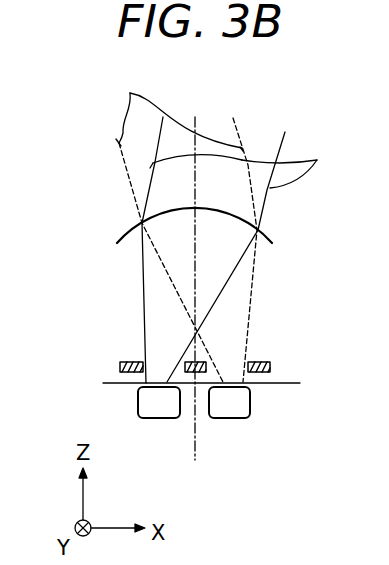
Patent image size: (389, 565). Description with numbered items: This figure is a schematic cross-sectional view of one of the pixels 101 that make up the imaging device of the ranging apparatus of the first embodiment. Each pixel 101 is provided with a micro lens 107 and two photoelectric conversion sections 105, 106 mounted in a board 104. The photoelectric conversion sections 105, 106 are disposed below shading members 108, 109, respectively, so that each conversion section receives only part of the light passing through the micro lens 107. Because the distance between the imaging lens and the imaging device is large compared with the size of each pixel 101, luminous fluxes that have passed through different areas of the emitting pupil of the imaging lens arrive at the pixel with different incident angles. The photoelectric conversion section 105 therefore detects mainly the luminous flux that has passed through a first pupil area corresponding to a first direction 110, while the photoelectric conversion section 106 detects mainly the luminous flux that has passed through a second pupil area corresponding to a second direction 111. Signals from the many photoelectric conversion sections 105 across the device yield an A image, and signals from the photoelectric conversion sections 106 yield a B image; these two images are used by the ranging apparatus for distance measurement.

The pixel 101 is at (306, 127).
The board 104 is at (112, 392).
The photoelectric conversion section 105 is at (155, 420).
The photoelectric conversion section 106 is at (227, 420).
The micro lens 107 is at (258, 230).
The shading member 108 is at (174, 372).
The shading member 109 is at (204, 362).
The first direction 110 is at (297, 167).
The second direction 111 is at (130, 93).